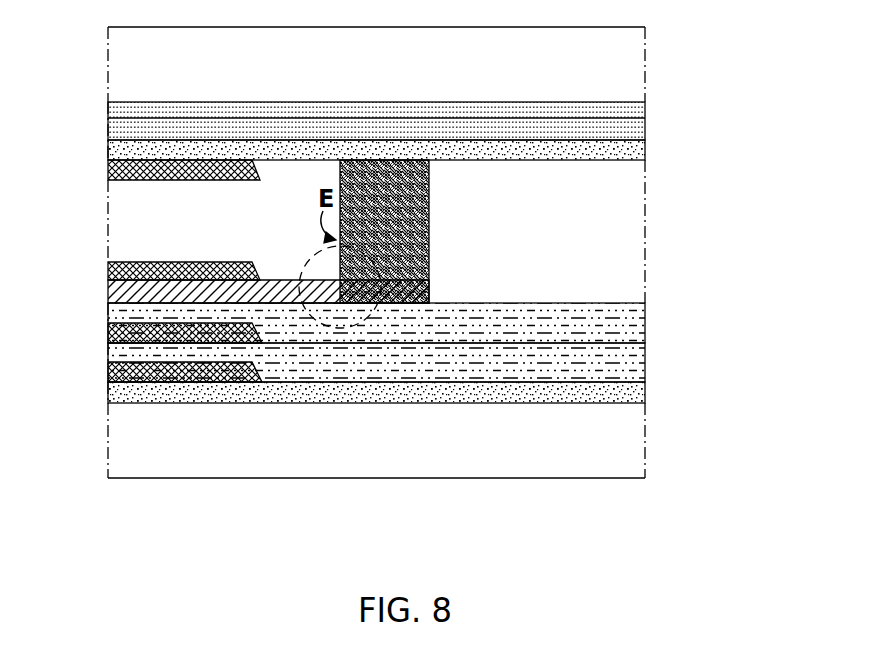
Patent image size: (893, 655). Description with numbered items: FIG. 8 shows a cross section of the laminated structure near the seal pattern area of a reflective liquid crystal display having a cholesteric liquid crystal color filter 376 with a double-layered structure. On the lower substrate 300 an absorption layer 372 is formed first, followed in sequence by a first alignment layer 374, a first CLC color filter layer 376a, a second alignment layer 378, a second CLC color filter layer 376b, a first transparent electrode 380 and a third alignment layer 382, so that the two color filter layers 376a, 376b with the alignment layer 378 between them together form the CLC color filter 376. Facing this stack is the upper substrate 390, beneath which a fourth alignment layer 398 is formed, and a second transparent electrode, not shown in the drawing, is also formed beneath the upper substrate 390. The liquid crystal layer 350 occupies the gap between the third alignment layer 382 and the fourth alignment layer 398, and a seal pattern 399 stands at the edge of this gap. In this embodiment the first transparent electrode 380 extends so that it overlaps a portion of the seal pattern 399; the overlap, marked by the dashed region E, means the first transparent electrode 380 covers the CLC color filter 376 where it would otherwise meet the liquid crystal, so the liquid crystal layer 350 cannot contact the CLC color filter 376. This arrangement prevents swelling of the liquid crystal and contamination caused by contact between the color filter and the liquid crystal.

The upper substrate 390 is at (630, 60).
The liquid crystal layer 350 is at (633, 220).
The fourth alignment layer 398 is at (108, 168).
The third alignment layer 382 is at (108, 266).
The first transparent electrode 380 is at (108, 291).
The seal pattern 399 is at (430, 218).
The cholesteric liquid crystal color filter 376 is at (451, 342).
The second CLC color filter layer 376b is at (640, 323).
The first CLC color filter layer 376a is at (640, 352).
The second alignment layer 378 is at (108, 331).
The first alignment layer 374 is at (108, 373).
The absorption layer 372 is at (640, 392).
The lower substrate 300 is at (637, 442).